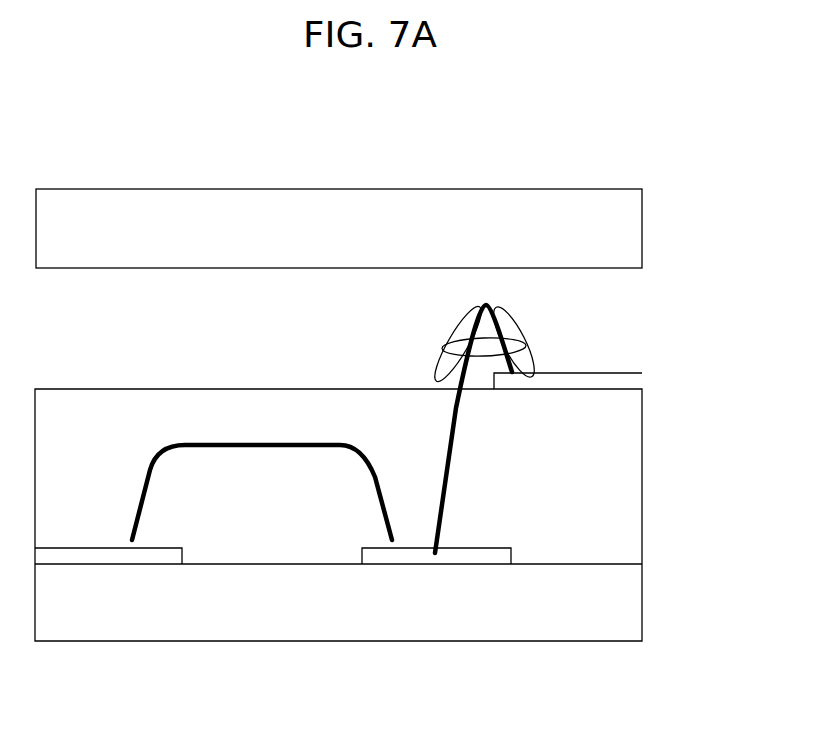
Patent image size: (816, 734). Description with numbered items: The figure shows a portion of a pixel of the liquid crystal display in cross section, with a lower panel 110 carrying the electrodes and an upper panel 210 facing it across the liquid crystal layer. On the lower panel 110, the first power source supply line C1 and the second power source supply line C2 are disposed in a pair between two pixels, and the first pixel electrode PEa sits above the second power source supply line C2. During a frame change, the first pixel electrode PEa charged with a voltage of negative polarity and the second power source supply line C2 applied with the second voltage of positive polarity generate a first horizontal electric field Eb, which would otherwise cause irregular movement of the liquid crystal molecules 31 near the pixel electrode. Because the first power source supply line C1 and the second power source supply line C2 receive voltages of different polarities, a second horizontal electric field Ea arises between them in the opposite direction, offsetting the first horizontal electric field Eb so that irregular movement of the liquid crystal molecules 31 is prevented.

The upper substrate 210 is at (630, 231).
The substrate 110 is at (628, 602).
The first pixel electrode PEa is at (630, 380).
The first power source supply line C1 is at (110, 555).
The second power source supply line C2 is at (462, 555).
The second horizontal electric field Ea is at (262, 478).
The first horizontal electric field Eb is at (473, 429).
The liquid crystal molecules 31 is at (455, 343).